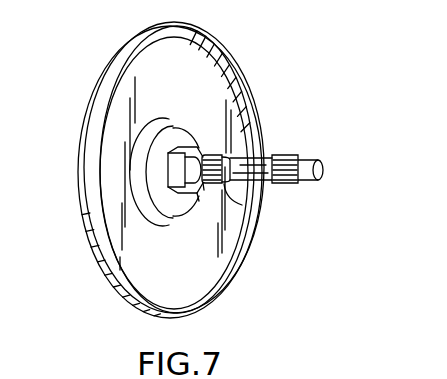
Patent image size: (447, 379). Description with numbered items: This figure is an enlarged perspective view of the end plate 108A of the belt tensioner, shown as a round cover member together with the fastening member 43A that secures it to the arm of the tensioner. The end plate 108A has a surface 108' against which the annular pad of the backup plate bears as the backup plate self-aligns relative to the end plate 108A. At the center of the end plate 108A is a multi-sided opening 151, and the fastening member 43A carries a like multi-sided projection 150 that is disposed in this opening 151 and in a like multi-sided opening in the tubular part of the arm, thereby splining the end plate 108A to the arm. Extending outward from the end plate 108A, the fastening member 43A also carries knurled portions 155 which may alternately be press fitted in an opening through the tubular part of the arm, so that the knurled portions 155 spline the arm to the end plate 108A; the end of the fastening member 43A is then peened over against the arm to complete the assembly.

The end plate 108A is at (120, 46).
The surface of end plate 108' is at (206, 169).
The multi-sided opening 151 is at (168, 140).
The multi-sided projection 150 is at (170, 218).
The fastening member 43A is at (244, 166).
The knurled portions 155 is at (219, 208).